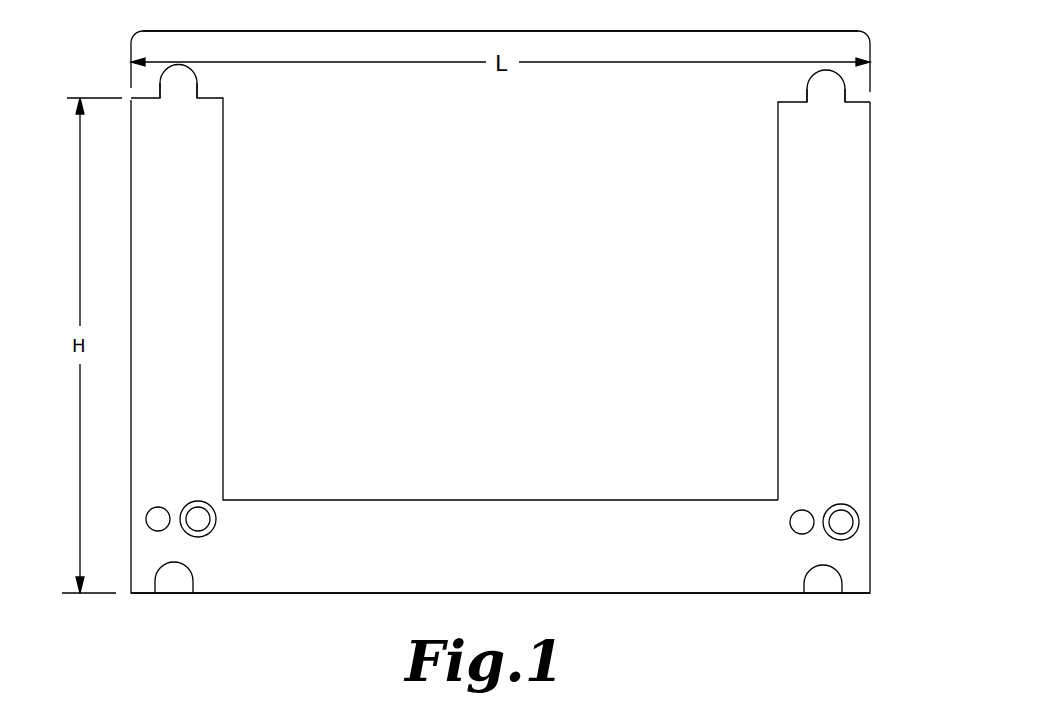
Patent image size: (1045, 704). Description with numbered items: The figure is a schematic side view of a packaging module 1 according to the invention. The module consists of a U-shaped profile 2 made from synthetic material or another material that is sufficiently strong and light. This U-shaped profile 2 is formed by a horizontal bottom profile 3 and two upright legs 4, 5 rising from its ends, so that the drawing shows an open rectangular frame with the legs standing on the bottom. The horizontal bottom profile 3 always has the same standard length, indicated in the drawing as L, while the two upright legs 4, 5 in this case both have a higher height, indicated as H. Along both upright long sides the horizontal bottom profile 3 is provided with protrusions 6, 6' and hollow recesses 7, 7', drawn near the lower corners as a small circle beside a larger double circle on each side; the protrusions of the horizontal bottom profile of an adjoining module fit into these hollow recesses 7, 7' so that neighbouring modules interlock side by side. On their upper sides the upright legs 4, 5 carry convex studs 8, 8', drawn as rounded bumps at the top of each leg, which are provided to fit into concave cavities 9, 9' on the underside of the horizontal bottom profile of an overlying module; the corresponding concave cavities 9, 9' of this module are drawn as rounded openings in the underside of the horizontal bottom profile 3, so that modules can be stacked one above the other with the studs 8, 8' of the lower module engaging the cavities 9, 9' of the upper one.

The packaging module 1 is at (876, 56).
The U-shaped profile 2 is at (500, 31).
The horizontal bottom profile 3 is at (365, 574).
The upright leg 4 is at (182, 312).
The upright leg 5 is at (815, 315).
The protrusion 6 is at (206, 482).
The hollow recess 7 is at (247, 482).
The convex stud 8 is at (226, 87).
The concave cavity 9 is at (174, 616).
The protrusion 6' is at (740, 484).
The hollow recess 7' is at (789, 485).
The convex stud 8' is at (778, 86).
The concave cavity 9' is at (823, 615).